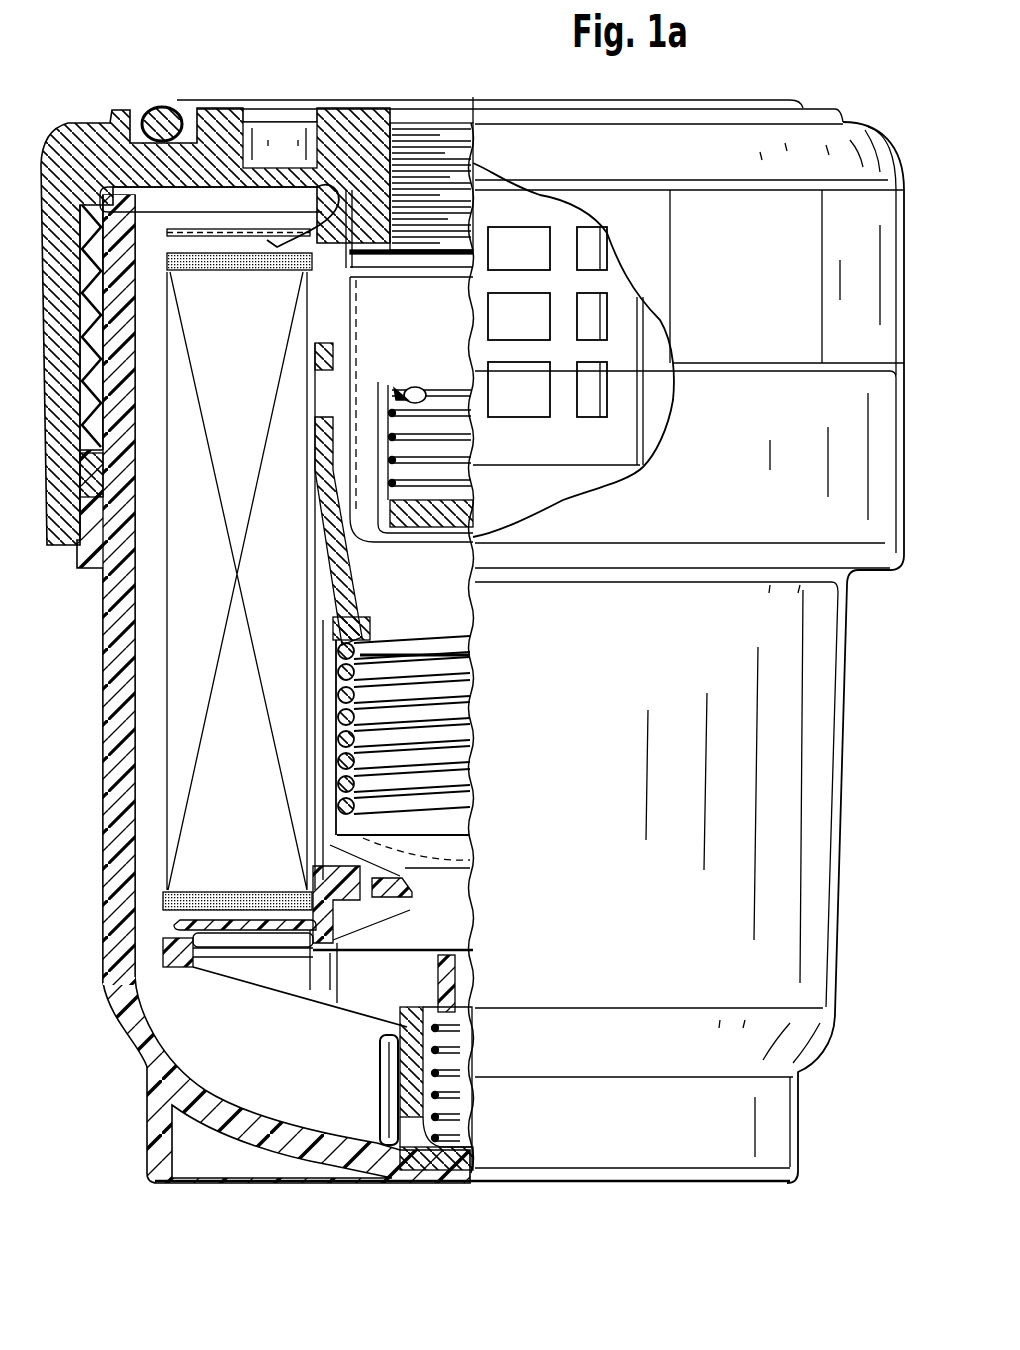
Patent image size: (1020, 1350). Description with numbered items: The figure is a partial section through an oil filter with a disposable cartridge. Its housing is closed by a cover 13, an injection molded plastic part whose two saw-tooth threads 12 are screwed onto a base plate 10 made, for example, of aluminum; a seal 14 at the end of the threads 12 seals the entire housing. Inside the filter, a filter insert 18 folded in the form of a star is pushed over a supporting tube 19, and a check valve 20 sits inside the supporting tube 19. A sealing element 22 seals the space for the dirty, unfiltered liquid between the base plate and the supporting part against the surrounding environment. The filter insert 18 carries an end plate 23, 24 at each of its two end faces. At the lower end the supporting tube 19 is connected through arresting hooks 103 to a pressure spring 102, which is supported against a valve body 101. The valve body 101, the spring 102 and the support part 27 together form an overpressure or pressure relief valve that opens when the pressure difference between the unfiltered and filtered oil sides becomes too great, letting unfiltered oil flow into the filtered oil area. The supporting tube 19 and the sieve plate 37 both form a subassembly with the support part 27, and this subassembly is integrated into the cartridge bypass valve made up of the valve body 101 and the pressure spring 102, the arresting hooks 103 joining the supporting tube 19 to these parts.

The base plate 10 is at (212, 118).
The saw-tooth threads 12 is at (86, 428).
The cover 13 is at (117, 816).
The seal 14 is at (104, 486).
The filter insert 18 is at (173, 595).
The supporting tube 19 is at (320, 463).
The check valve 20 is at (369, 440).
The sealing element 22 is at (155, 103).
The end plate 23 is at (172, 258).
The end plate 24 is at (174, 897).
The support part 27 is at (362, 930).
The sieve plate 37 is at (247, 958).
The valve body 101 is at (343, 852).
The pressure spring 102 is at (440, 687).
The arresting hooks 103 is at (360, 604).